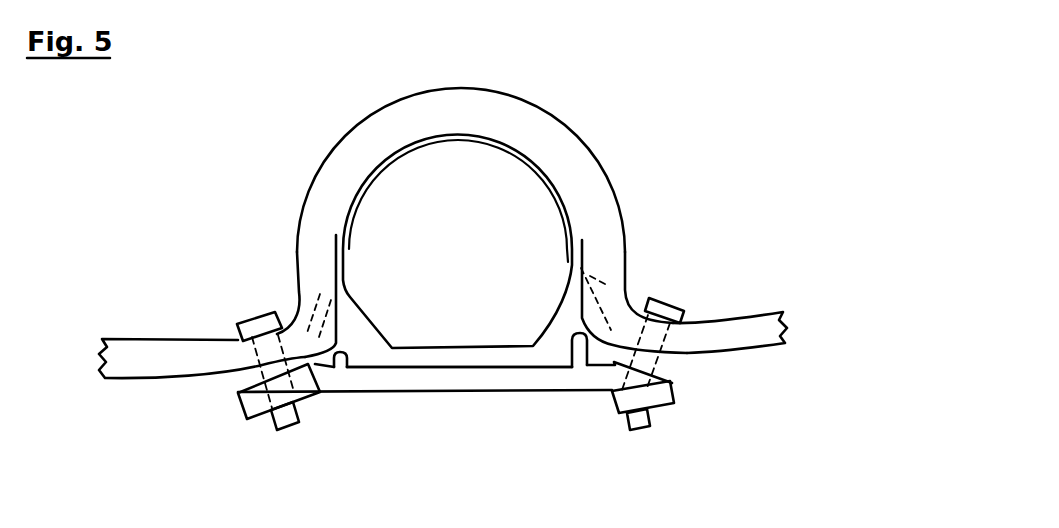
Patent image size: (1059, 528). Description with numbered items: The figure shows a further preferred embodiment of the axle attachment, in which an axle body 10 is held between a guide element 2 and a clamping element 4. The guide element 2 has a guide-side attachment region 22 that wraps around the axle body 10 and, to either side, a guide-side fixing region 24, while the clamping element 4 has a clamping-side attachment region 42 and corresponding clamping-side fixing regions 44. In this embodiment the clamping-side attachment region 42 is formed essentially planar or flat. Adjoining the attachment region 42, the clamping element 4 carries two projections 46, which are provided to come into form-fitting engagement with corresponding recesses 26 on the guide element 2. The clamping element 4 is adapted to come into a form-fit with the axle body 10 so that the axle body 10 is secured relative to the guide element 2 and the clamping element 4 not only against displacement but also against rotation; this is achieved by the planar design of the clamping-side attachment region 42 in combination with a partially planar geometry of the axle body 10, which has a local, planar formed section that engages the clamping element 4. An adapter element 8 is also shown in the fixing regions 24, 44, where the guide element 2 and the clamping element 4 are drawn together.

The guide element 2 is at (604, 173).
The clamping element 4 is at (392, 392).
The adapter element 8 is at (289, 416).
The axle body 10 is at (580, 245).
The guide-side attachment region 22 is at (526, 171).
The guide-side fixing region 24 is at (248, 353).
The projection or recess 26 is at (325, 303).
The clamping-side attachment region 42 is at (511, 356).
The clamping-side fixing region 44 is at (268, 398).
The projection or recess 46 is at (337, 368).